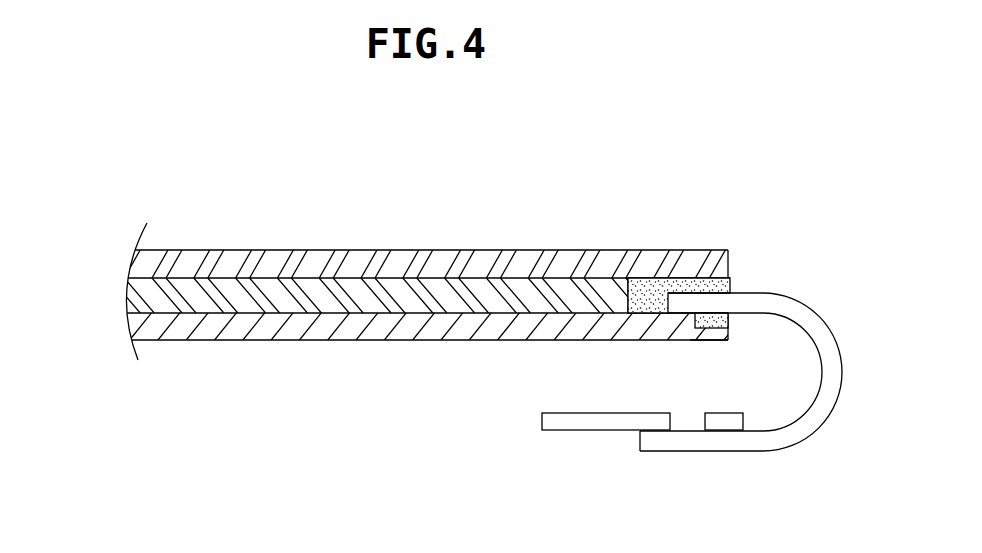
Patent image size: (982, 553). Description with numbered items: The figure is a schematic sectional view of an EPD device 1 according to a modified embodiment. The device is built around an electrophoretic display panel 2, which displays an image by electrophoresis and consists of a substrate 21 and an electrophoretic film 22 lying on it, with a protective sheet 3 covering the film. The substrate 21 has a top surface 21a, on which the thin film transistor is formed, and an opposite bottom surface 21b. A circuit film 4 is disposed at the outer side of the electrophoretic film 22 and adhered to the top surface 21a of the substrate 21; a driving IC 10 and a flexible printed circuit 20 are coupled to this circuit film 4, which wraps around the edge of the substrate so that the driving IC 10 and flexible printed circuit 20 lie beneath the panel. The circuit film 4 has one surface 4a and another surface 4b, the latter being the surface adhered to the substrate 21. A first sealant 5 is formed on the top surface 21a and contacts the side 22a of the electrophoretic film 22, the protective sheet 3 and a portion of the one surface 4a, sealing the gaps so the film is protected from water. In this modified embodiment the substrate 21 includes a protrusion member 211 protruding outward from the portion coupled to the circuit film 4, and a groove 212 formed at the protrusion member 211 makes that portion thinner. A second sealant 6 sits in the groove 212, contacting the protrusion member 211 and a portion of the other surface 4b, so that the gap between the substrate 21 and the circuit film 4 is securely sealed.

The EPD device 1 is at (775, 148).
The electrophoretic display panel 2 is at (47, 280).
The protective sheet 3 is at (137, 263).
The substrate 21 is at (150, 328).
The top surface of the substrate 21a is at (476, 313).
The bottom surface of the substrate 21b is at (405, 342).
The protrusion member 211 is at (708, 341).
The groove 212 is at (728, 321).
The electrophoretic film 22 is at (133, 292).
The side of the electrophoretic film 22a is at (633, 295).
The first sealant 5 is at (649, 289).
The second sealant 6 is at (706, 317).
The circuit film 4 is at (798, 436).
The one surface of the circuit film 4a is at (822, 311).
The other surface of the circuit film 4b is at (808, 346).
The driving IC 10 is at (722, 422).
The flexible printed circuit 20 is at (598, 422).